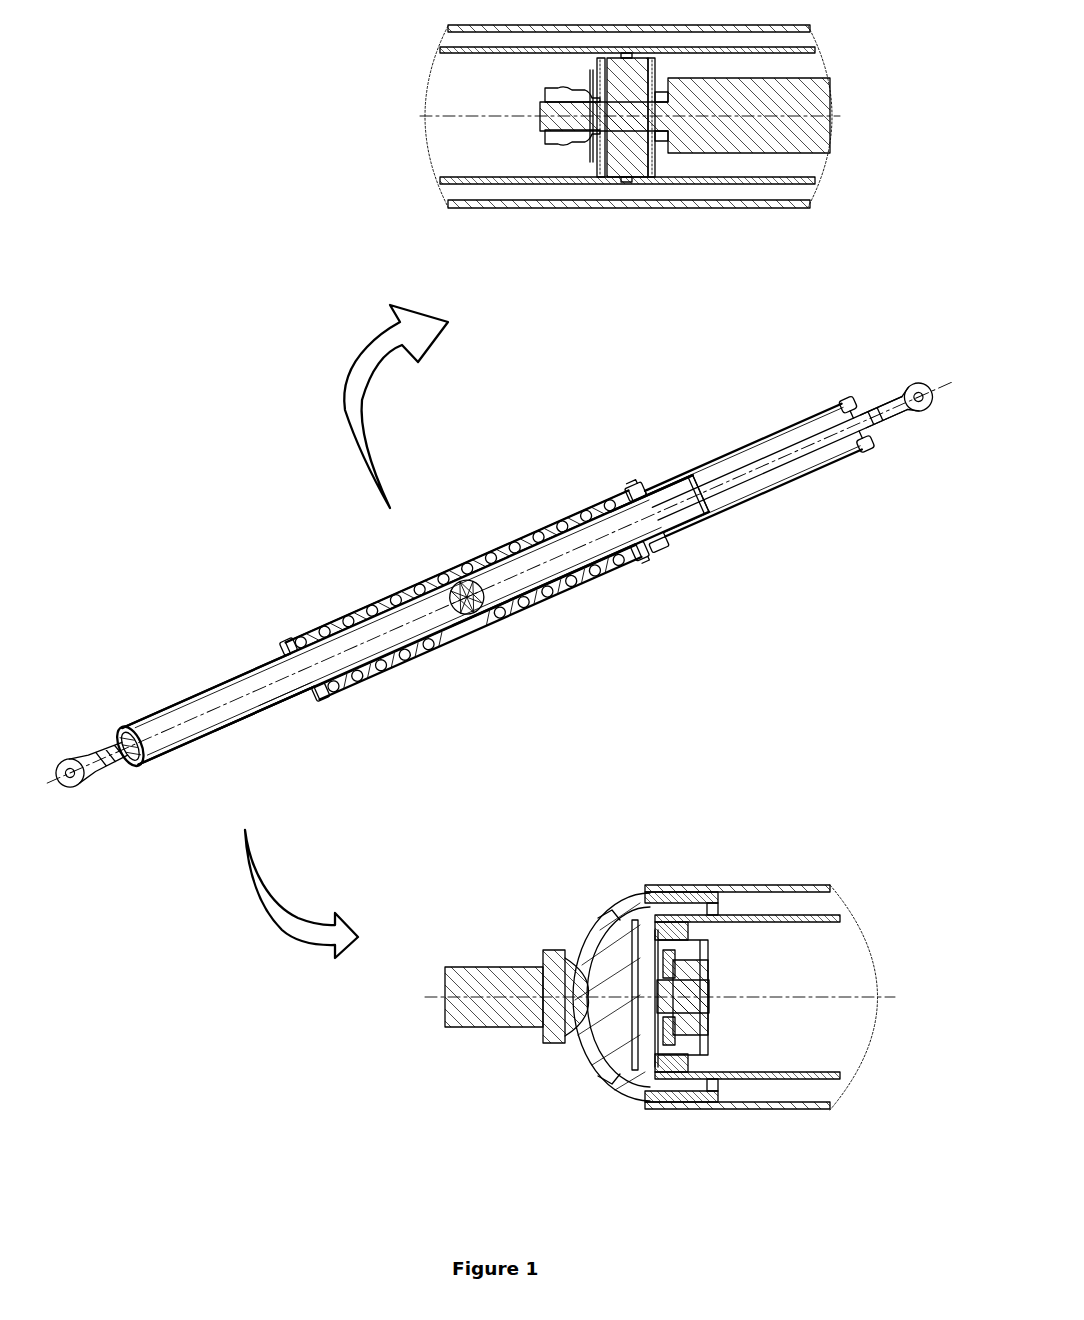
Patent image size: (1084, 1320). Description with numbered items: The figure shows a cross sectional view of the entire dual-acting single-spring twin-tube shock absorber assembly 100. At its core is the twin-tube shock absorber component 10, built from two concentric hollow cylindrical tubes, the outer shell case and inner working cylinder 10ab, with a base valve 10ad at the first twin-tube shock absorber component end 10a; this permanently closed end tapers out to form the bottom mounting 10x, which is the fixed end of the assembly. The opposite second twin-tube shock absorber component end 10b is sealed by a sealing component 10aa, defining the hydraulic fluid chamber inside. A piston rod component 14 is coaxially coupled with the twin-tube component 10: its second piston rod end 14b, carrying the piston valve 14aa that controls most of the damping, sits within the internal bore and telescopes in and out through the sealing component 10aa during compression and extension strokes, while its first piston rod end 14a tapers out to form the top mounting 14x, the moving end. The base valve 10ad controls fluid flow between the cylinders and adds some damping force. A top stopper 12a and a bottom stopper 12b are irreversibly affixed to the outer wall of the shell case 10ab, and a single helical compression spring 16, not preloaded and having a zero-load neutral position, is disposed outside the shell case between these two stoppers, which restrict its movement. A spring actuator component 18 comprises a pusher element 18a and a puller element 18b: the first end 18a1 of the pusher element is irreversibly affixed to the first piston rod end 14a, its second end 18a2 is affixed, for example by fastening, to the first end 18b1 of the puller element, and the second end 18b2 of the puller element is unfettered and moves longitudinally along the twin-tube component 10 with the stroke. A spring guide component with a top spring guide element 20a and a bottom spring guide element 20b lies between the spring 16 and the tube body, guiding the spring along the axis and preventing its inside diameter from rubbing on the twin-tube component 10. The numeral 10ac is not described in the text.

The dual-acting single-spring twin-tube shock absorber assembly 100 is at (305, 420).
The twin-tube shock absorber component 10 is at (188, 746).
The first twin-tube shock absorber component end 10a is at (163, 708).
The sealing component 10aa is at (708, 524).
The shell case and working cylinder 10ab is at (282, 714).
The tube outer surface portion 10ac is at (228, 731).
The base valve 10ad is at (148, 762).
The second twin-tube shock absorber component end 10b is at (650, 480).
The bottom mounting 10x is at (90, 795).
The top stopper 12a is at (636, 492).
The bottom stopper 12b is at (335, 703).
The piston rod component 14 is at (770, 470).
The first piston rod end 14a is at (884, 429).
The piston valve 14aa is at (490, 612).
The second piston rod end 14b is at (545, 603).
The top mounting 14x is at (900, 392).
The helical compression spring 16 is at (505, 553).
The spring actuator component 18 is at (535, 535).
The pusher element 18a is at (745, 447).
The first end of the pusher element 18a1 is at (835, 405).
The second end of the pusher element 18a2 is at (662, 550).
The puller element 18b is at (421, 580).
The first end of the puller element 18b1 is at (641, 572).
The second end of the puller element 18b2 is at (290, 648).
The top spring guide element 20a is at (610, 517).
The bottom spring guide element 20b is at (305, 638).